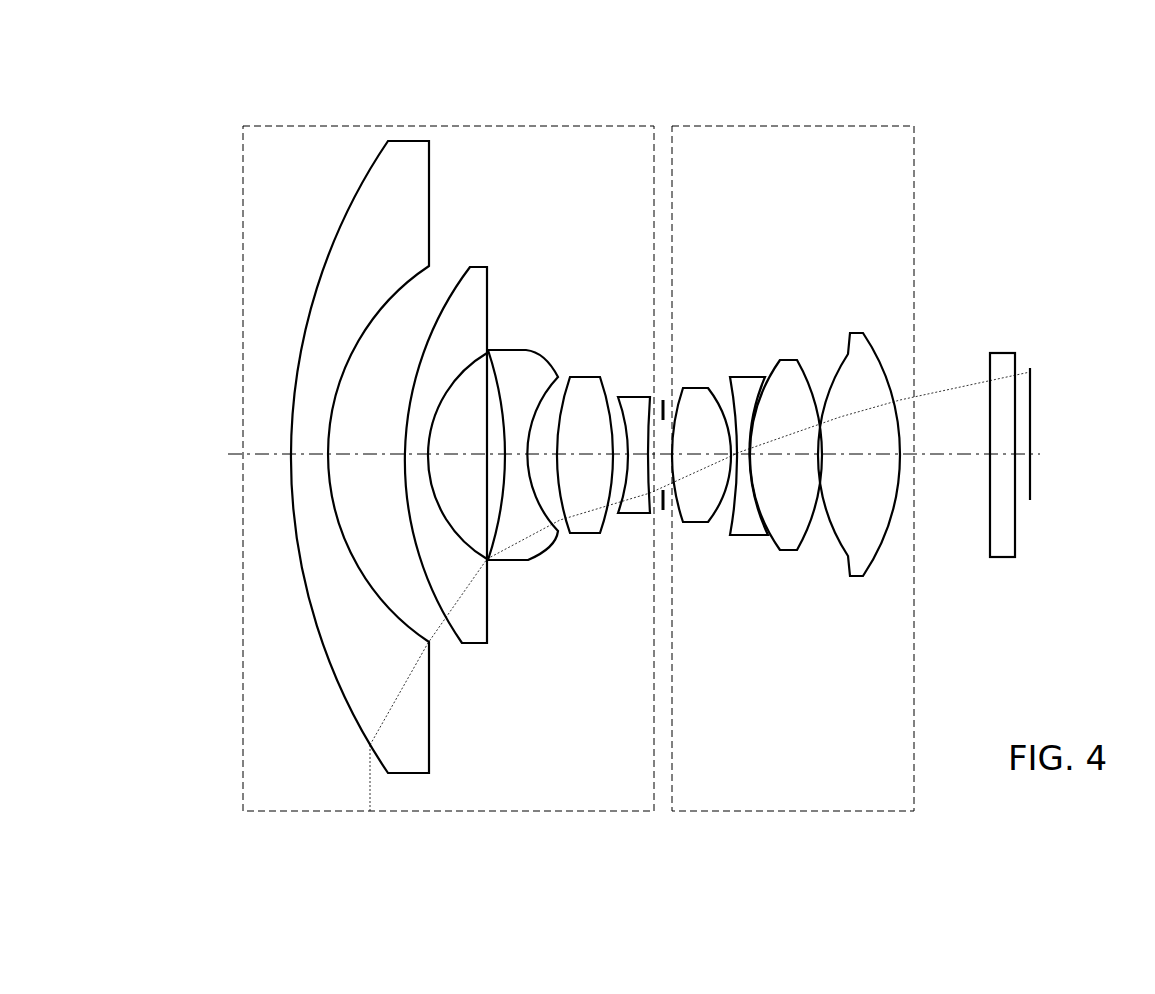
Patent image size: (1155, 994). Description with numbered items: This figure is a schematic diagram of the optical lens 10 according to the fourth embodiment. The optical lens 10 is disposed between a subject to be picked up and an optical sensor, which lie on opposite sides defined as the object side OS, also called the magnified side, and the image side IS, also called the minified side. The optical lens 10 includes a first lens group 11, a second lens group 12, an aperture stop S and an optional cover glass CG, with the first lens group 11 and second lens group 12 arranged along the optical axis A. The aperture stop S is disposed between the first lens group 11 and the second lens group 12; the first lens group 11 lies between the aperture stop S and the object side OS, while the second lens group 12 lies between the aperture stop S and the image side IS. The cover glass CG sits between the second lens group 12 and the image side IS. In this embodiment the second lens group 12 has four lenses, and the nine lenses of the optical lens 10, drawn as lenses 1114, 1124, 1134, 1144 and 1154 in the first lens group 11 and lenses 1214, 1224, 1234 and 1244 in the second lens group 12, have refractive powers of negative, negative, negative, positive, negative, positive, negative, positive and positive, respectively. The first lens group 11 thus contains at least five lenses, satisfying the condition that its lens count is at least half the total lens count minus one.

The optical lens 10 is at (1038, 148).
The first lens group 11 is at (394, 125).
The second lens group 12 is at (828, 125).
The first lens 1114 is at (431, 174).
The second lens 1124 is at (478, 267).
The third lens 1134 is at (520, 350).
The fourth lens 1144 is at (587, 377).
The fifth lens 1154 is at (648, 397).
The sixth lens 1214 is at (705, 523).
The seventh lens 1224 is at (747, 377).
The eighth lens 1234 is at (788, 553).
The ninth lens 1244 is at (854, 577).
The aperture stop S is at (654, 472).
The cover glass CG is at (1000, 353).
The image side IS is at (1050, 434).
The object side OS is at (207, 454).
The optical axis A is at (952, 457).